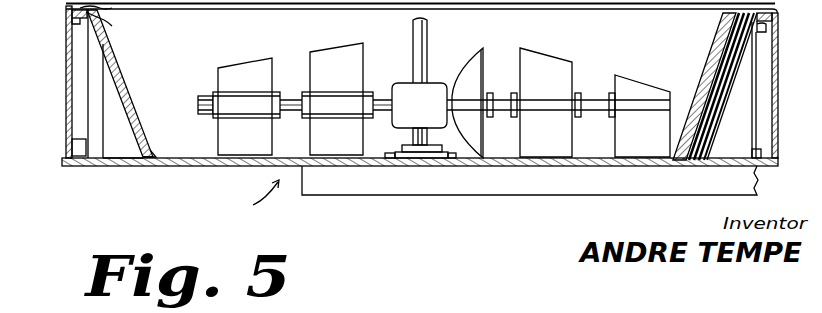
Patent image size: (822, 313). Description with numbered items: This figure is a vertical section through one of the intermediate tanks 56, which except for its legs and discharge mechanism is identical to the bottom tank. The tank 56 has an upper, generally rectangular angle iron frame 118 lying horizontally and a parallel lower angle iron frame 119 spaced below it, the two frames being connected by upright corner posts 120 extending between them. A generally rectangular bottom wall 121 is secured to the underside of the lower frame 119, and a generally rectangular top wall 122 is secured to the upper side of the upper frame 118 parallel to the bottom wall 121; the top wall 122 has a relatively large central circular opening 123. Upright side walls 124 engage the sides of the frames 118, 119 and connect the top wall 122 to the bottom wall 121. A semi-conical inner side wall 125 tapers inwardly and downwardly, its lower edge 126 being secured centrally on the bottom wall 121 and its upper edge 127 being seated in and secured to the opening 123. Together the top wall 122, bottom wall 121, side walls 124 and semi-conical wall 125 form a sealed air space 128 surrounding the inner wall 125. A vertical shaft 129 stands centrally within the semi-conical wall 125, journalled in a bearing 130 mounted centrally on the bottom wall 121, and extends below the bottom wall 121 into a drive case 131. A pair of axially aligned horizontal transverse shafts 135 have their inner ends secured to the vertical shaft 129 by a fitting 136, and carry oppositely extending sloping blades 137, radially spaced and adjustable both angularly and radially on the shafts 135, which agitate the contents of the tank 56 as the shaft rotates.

The intermediate tank 56 is at (255, 206).
The upper angle iron frame 118 is at (78, 24).
The lower angle iron frame 119 is at (72, 141).
The upright corner posts 120 is at (98, 94).
The bottom wall 121 is at (254, 165).
The top wall 122 is at (769, 6).
The central circular opening 123 is at (94, 6).
The upright side walls 124 is at (67, 107).
The semi-conical inner side wall 125 is at (110, 67).
The lower edge 126 is at (156, 153).
The upper edge 127 is at (101, 14).
The sealed air space 128 is at (122, 147).
The vertical shaft 129 is at (422, 63).
The bearing 130 is at (413, 152).
The drive case 131 is at (361, 188).
The transverse shafts 135 is at (200, 100).
The fitting 136 is at (407, 90).
The sloping blades 137 is at (250, 72).